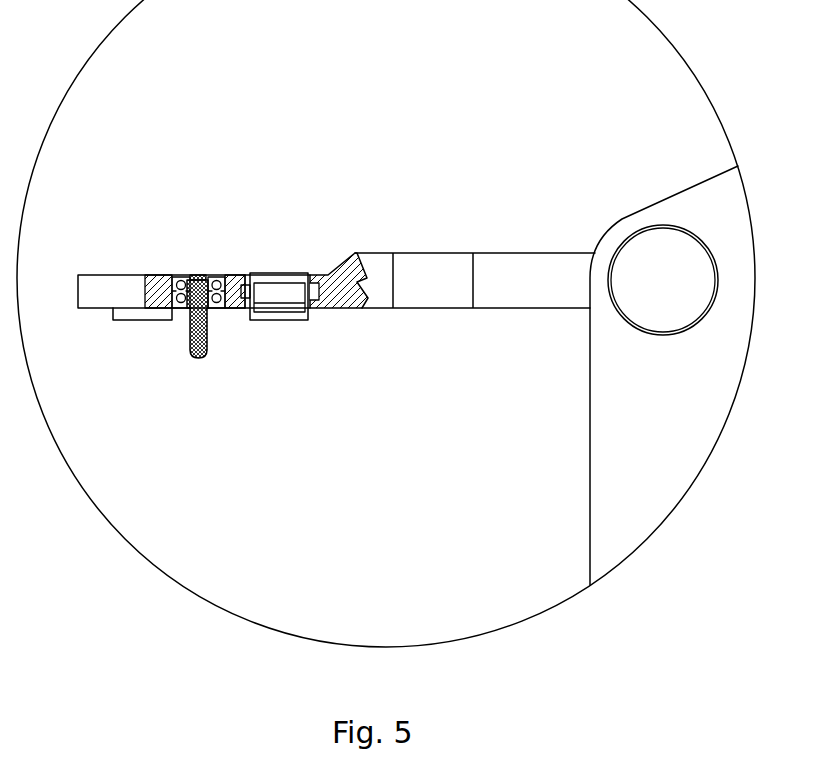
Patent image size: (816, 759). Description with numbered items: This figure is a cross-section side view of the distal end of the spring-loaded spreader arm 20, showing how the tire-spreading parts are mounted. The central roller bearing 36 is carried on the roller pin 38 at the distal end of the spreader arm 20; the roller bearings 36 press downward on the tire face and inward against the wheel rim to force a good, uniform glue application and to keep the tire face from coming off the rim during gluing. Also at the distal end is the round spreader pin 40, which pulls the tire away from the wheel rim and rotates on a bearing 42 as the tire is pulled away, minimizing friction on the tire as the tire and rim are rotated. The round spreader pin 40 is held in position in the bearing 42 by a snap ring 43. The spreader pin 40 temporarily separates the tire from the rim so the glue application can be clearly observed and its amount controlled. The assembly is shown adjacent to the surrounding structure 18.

The frame body 18 is at (610, 112).
The spring-loaded spreader arm 20 is at (537, 251).
The central roller bearing 36 is at (142, 318).
The roller pin 38 is at (315, 275).
The round spreader pin 40 is at (203, 358).
The bearing 42 is at (217, 275).
The snap ring 43 is at (189, 275).